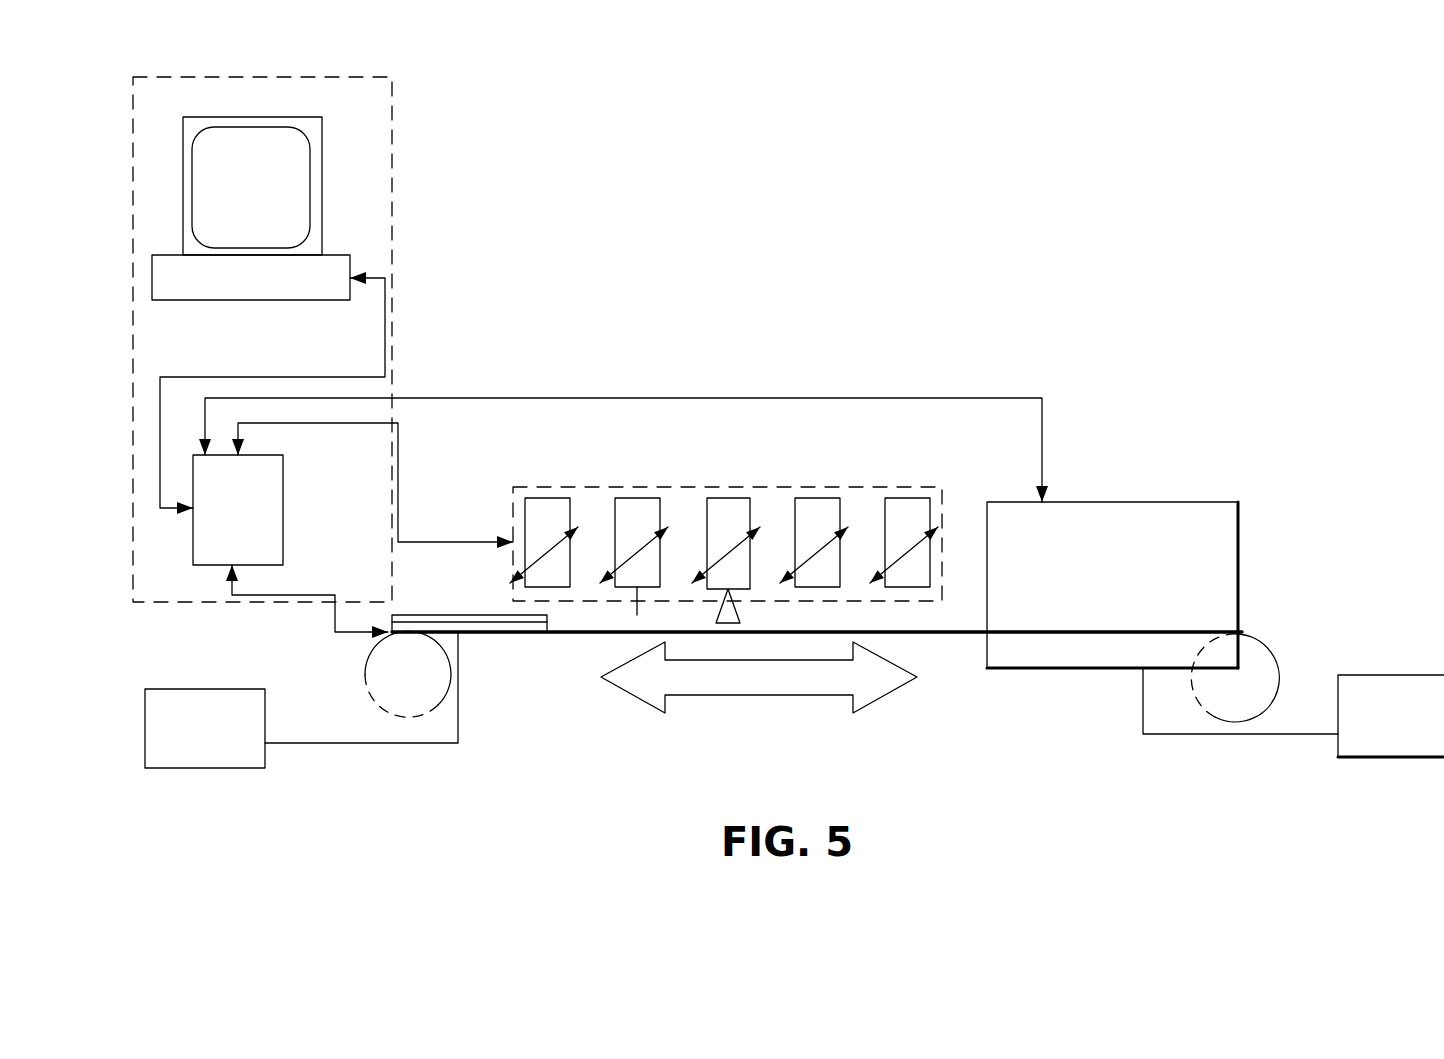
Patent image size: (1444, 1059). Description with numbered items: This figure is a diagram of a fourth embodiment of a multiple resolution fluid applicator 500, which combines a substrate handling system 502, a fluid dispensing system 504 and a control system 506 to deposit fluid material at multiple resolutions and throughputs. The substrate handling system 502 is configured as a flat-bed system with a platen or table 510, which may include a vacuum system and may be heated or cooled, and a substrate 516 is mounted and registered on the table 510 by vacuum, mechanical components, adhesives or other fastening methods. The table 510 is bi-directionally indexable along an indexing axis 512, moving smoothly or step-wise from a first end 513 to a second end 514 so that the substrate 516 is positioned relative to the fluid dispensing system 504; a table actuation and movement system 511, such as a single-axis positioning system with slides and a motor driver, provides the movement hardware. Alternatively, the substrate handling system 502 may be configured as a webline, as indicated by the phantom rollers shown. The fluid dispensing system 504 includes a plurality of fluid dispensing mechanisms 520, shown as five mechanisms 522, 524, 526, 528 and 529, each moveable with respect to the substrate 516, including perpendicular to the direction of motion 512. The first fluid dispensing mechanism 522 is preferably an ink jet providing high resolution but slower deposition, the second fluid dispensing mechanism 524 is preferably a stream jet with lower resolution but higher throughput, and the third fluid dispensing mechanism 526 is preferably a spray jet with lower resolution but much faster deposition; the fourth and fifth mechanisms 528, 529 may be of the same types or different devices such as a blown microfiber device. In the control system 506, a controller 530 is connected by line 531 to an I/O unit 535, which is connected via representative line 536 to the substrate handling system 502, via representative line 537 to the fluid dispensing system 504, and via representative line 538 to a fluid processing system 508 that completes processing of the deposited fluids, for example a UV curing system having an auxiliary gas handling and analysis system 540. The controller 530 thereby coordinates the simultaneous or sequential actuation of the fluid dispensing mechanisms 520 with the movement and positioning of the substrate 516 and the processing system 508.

The multiple resolution fluid applicator 500 is at (908, 254).
The substrate handling system 502 is at (563, 635).
The fluid dispensing system 504 is at (574, 486).
The control system 506 is at (392, 157).
The fluid processing system 508 is at (1143, 500).
The platen or table 510 is at (472, 627).
The table actuation and movement system 511 is at (217, 768).
The indexing axis 512 is at (747, 698).
The first end 513 is at (383, 633).
The second end 514 is at (1248, 628).
The substrate 516 is at (488, 615).
The fluid dispensing mechanisms 520 is at (727, 498).
The first fluid dispensing mechanism 522 is at (538, 497).
The second fluid dispensing mechanism 524 is at (627, 497).
The third fluid dispensing mechanism 526 is at (727, 498).
The fourth fluid dispensing mechanism 528 is at (822, 498).
The fifth fluid dispensing mechanism 529 is at (905, 498).
The controller 530 is at (248, 115).
The line 531 is at (260, 377).
The I/O unit 535 is at (283, 512).
The representative line 536 is at (258, 597).
The representative line 537 is at (398, 478).
The representative line 538 is at (727, 399).
The auxiliary gas handling and analysis system 540 is at (1388, 673).